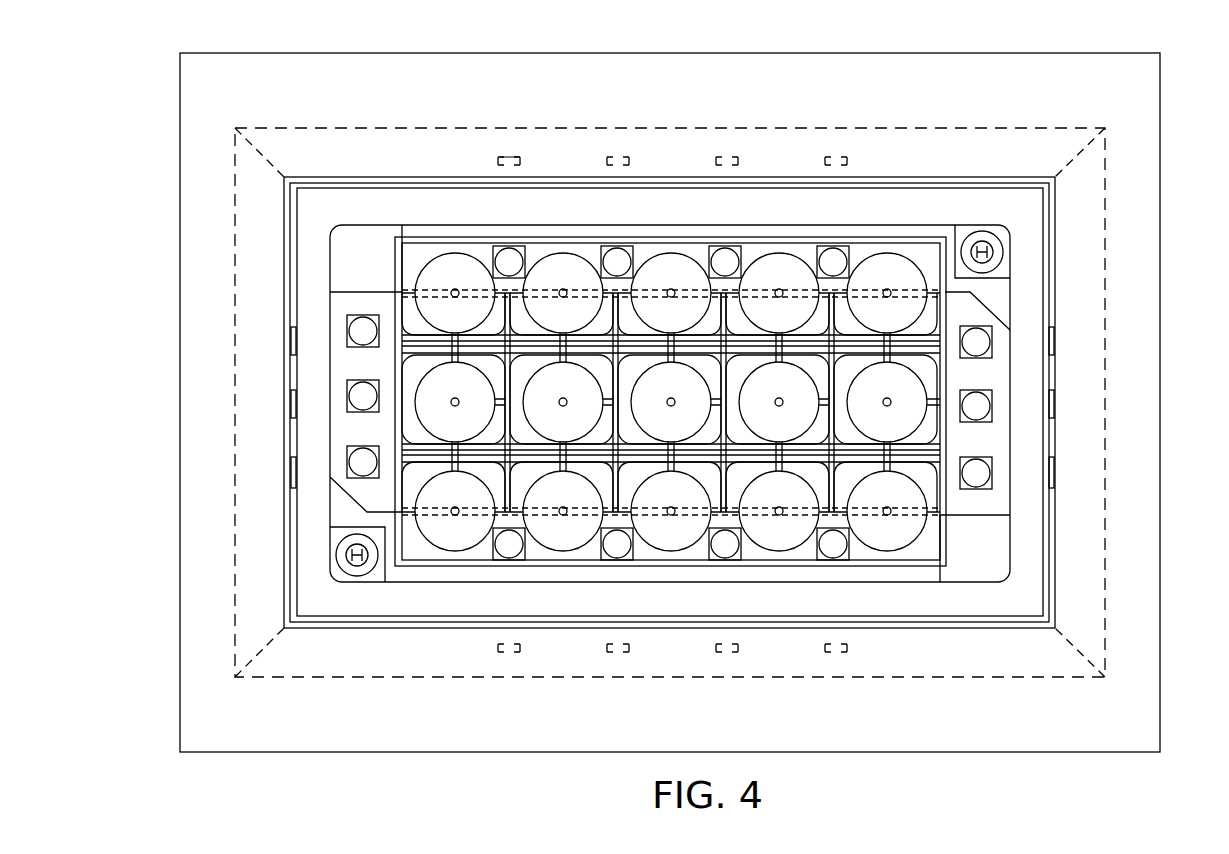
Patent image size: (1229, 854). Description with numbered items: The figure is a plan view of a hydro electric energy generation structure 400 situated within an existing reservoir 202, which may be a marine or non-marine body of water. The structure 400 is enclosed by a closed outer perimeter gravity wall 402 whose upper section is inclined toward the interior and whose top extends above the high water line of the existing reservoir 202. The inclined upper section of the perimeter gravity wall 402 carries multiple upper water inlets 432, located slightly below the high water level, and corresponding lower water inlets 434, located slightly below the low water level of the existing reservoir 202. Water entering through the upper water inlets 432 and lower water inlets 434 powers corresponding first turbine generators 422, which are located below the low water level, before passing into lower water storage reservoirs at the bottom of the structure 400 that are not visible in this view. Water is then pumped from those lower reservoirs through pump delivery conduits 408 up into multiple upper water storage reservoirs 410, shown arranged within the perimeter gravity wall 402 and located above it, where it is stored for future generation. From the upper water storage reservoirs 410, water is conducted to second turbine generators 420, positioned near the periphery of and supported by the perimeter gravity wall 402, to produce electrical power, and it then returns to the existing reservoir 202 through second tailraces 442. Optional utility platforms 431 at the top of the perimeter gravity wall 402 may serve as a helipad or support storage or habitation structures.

The hydro electric energy generation structure 400 is at (1014, 54).
The perimeter gravity wall 402 is at (765, 80).
The existing reservoir 202 is at (164, 446).
The pump delivery conduit 408 is at (452, 297).
The upper water storage reservoir 410 is at (450, 258).
The second turbine generator 420 is at (357, 333).
The first turbine generator 422 is at (511, 250).
The utility platform 431 is at (990, 232).
The upper water inlet 432 is at (512, 169).
The lower water inlet 434 is at (500, 158).
The second tailrace 442 is at (291, 474).